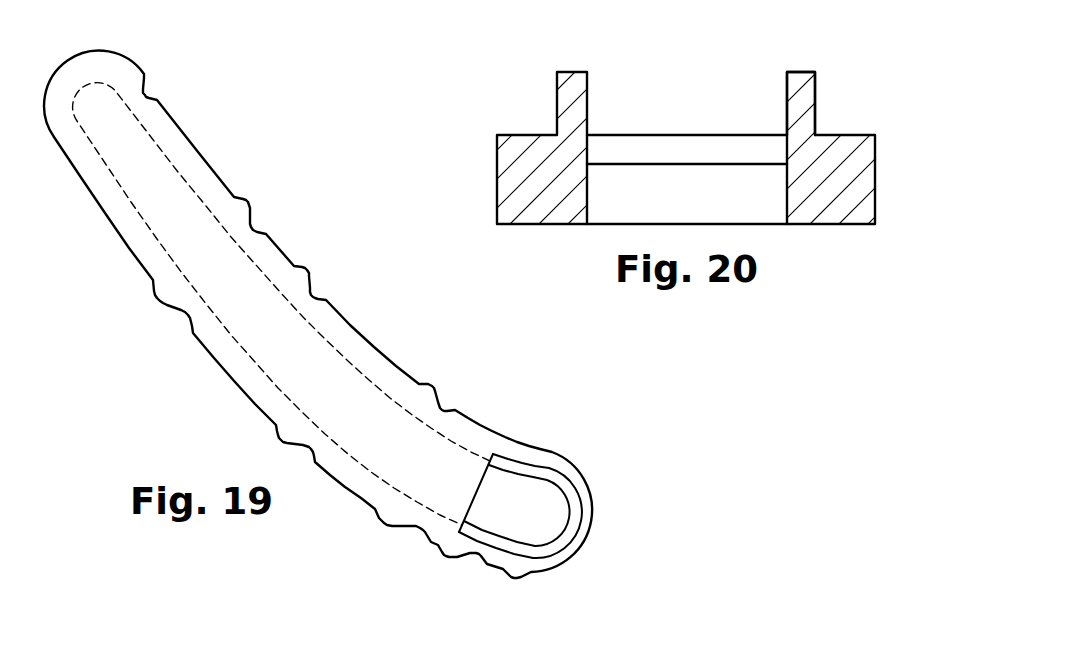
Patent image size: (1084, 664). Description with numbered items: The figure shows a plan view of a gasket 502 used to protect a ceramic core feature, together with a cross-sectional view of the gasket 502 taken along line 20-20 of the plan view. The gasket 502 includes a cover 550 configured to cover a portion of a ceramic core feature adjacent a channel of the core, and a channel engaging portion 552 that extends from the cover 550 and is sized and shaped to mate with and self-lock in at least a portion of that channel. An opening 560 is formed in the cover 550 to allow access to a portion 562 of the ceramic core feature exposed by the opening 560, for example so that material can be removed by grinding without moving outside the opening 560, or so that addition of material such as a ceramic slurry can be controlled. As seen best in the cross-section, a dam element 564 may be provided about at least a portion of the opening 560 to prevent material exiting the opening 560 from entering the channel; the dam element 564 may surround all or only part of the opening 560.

In FIG. 19, the gasket 502 is at (357, 322).
In FIG. 20, the gasket 502 is at (678, 134).
In FIG. 19, the cover 550 is at (243, 305).
In FIG. 20, the cover 550 is at (693, 148).
In FIG. 19, the channel engaging portion 552 is at (360, 357).
In FIG. 20, the channel engaging portion 552 is at (837, 183).
In FIG. 19, the opening 560 is at (553, 513).
In FIG. 20, the opening 560 is at (630, 105).
In FIG. 19, the portion of ceramic core feature 562 is at (537, 516).
In FIG. 19, the dam element 564 is at (567, 542).
In FIG. 20, the dam element 564 is at (815, 85).
In FIG. 19, the section line 20- 20 is at (520, 425).